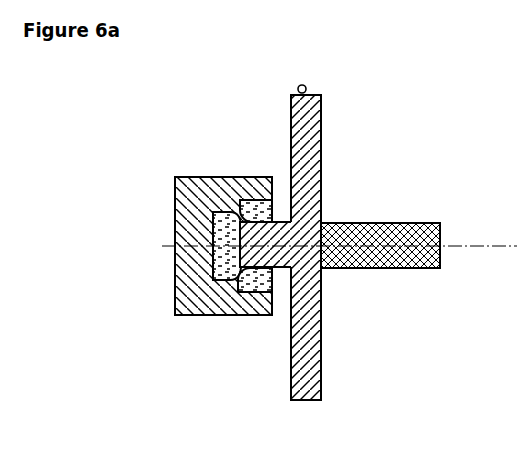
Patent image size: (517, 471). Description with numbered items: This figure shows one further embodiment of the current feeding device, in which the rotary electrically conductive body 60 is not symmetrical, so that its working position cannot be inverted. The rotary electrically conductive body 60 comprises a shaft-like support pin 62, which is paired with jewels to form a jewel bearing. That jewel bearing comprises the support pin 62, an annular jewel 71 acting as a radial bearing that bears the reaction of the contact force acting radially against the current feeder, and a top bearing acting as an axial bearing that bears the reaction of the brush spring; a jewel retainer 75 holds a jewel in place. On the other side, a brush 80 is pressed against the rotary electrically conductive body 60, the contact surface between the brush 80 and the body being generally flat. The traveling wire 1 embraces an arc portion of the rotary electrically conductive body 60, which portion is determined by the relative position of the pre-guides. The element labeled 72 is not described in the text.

The traveling wire 1 is at (299, 86).
The annular jewel 71 is at (250, 196).
The sealing element 72 is at (213, 217).
The jewel retainer 75 is at (238, 290).
The shaft-like support pin 62 is at (280, 268).
The rotary electrically conductive body 60 is at (292, 390).
The brush 80 is at (377, 230).